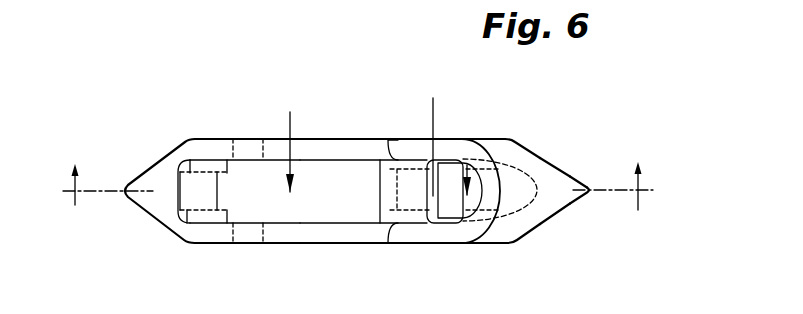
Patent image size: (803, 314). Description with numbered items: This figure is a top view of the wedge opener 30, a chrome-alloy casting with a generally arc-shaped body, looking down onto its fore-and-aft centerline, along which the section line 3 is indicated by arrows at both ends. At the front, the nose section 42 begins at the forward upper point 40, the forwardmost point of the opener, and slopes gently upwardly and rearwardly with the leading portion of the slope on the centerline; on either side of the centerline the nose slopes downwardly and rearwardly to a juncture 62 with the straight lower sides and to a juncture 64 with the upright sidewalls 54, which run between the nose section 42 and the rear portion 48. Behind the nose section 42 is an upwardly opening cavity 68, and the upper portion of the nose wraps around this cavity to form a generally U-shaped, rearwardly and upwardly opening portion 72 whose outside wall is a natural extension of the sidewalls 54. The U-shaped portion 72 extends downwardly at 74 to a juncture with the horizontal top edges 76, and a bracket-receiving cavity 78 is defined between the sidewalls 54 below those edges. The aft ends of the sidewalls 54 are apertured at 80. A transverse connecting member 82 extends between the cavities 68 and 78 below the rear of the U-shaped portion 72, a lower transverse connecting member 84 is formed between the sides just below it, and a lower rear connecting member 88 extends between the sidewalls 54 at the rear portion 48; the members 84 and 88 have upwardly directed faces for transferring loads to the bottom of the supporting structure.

The section line 3- 3 is at (353, 191).
The opener 30 is at (602, 102).
The forward upper point 40 is at (590, 192).
The nose section 42 is at (573, 179).
The rear portion 48 is at (127, 188).
The upright sidewalls 54 is at (313, 138).
The juncture 62 is at (553, 165).
The juncture 64 is at (506, 134).
The upwardly opening cavity 68 is at (466, 160).
The U-shaped portion 72 is at (441, 148).
The downward extension of U-shaped portion 74 is at (383, 141).
The horizontal top edges 76 is at (344, 146).
The bracket-receiving cavity 78 is at (290, 113).
The apertures 80 is at (233, 158).
The transverse connecting member 82 is at (366, 158).
The lower transverse connecting member 84 is at (445, 137).
The lower rear connecting member 88 is at (192, 192).